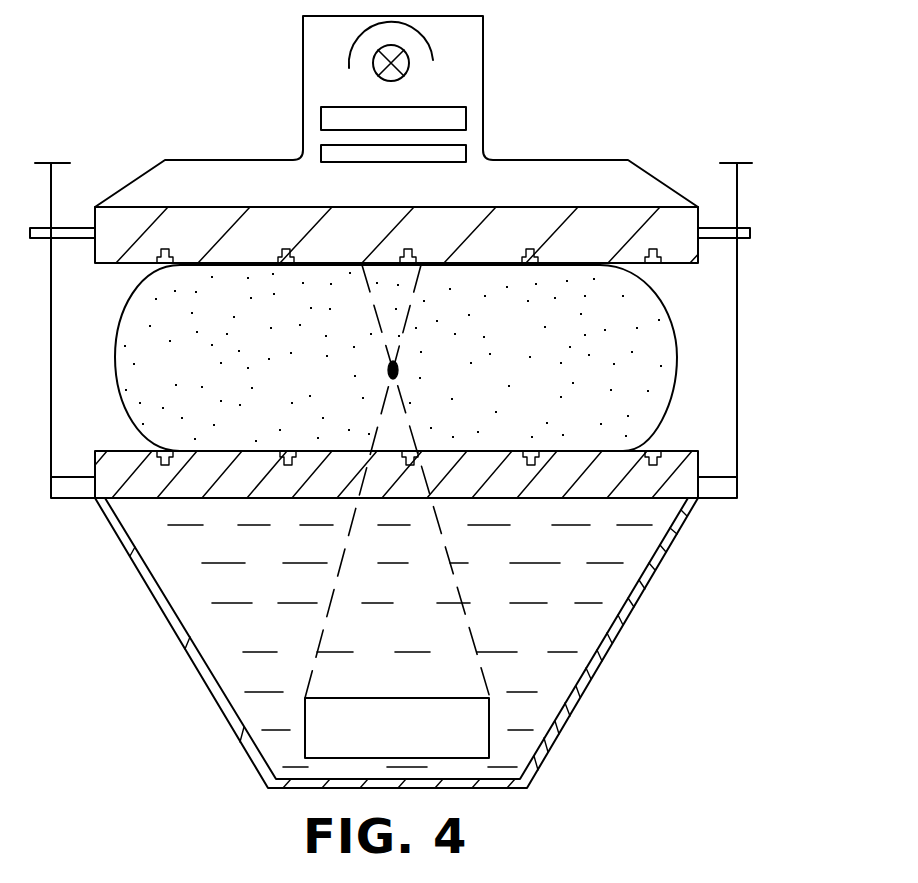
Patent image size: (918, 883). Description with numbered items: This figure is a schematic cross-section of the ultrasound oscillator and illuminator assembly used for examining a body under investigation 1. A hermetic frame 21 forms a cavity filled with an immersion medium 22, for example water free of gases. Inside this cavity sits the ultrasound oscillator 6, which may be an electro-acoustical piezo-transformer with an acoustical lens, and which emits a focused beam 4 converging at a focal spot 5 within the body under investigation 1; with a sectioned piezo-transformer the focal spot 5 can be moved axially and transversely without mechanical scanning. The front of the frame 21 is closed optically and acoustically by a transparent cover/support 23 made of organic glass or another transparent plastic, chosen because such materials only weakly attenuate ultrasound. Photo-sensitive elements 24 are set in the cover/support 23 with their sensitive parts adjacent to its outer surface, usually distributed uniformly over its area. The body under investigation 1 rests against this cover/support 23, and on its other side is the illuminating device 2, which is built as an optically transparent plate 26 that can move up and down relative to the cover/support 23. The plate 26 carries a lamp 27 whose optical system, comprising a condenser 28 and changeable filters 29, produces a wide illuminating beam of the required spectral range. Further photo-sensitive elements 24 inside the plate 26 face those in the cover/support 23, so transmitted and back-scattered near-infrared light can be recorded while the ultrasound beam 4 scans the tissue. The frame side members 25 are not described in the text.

The body under investigation 1 is at (643, 365).
The illuminator 2 is at (322, 77).
The focused beam 4 is at (440, 582).
The focal spot 5 is at (400, 368).
The ultrasound oscillator 6 is at (480, 735).
The hermetic frame 21 is at (399, 643).
The immersion medium 22 is at (600, 597).
The cover/support 23 is at (113, 463).
The photo-sensitive elements 24 is at (533, 255).
The frame 25 is at (738, 358).
The optically transparent plate 26 is at (292, 225).
The lamp 27 is at (407, 62).
The condenser 28 is at (458, 118).
The changeable filters 29 is at (462, 155).